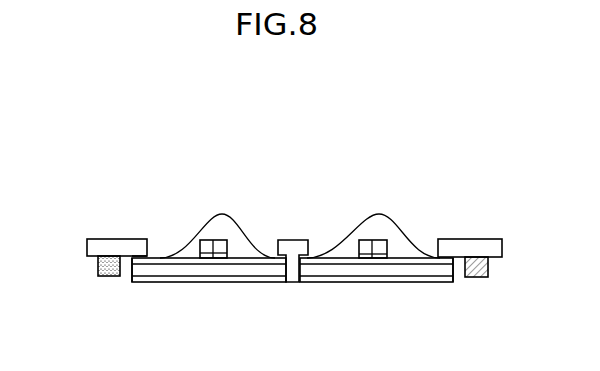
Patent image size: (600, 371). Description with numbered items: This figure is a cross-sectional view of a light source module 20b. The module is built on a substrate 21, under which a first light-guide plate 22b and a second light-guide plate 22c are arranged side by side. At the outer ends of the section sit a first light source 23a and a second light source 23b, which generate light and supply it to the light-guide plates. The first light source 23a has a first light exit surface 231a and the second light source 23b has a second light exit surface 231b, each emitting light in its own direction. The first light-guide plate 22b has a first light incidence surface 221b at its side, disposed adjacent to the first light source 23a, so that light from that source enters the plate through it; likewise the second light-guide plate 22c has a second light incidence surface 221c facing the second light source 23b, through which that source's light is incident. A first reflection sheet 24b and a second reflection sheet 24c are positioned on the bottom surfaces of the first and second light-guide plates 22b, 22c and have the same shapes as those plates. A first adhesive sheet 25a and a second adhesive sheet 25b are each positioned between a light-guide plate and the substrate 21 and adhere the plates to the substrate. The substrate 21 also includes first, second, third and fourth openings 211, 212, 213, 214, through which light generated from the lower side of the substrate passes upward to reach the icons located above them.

The light source module 20b is at (398, 100).
The substrate 21 is at (93, 246).
The first light exit surface 231a is at (127, 257).
The second light exit surface 231b is at (463, 258).
The first light source 23a is at (109, 277).
The second light source 23b is at (478, 278).
The first light-guide plate 22b is at (210, 268).
The second light-guide plate 22c is at (388, 270).
The first reflection sheet 24b is at (250, 282).
The second reflection sheet 24c is at (345, 282).
The first light incidence surface 221b is at (131, 260).
The second light incidence surface 221c is at (455, 266).
The first adhesive sheet 25a is at (218, 240).
The second adhesive sheet 25b is at (374, 240).
The first opening 211 is at (173, 252).
The second opening 212 is at (267, 252).
The third opening 213 is at (333, 252).
The fourth opening 214 is at (423, 252).